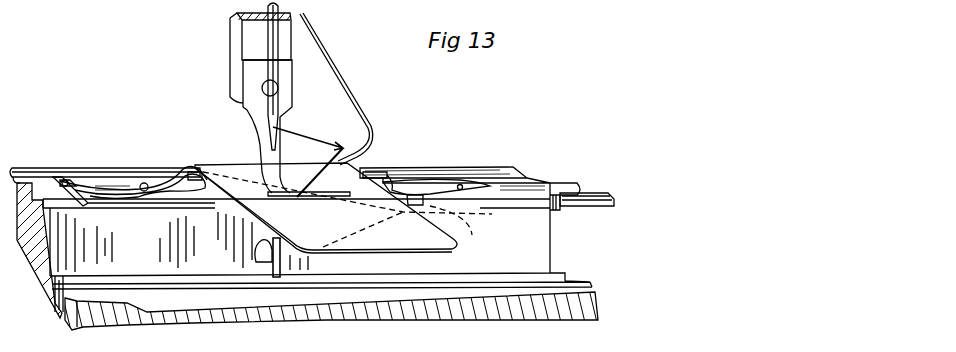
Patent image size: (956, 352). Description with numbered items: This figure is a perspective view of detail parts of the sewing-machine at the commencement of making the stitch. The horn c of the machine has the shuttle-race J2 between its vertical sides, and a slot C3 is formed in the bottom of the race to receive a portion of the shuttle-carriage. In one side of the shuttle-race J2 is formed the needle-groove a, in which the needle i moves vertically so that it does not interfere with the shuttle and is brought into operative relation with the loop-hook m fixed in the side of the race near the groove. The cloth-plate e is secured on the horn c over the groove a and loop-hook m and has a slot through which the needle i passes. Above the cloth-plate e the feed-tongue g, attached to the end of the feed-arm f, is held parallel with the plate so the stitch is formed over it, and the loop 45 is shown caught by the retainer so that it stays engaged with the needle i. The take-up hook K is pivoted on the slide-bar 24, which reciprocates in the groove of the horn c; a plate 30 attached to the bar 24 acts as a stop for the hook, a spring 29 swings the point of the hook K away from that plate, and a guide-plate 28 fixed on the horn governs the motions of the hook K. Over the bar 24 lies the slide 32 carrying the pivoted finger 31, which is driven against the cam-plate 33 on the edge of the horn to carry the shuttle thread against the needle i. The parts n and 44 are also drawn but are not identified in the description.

The shuttle-race J2 is at (317, 236).
The horn c is at (42, 268).
The slot C3 is at (565, 281).
The guide-plate 28 is at (46, 169).
The plate 30 is at (134, 191).
The take-up hook K is at (168, 181).
The spring 29 is at (72, 182).
The spring end 44 is at (190, 170).
The cloth-plate e is at (343, 208).
The needle i is at (279, 9).
The feed-arm f is at (235, 32).
The feed-tongue g is at (255, 105).
The arm n is at (338, 70).
The loop 45 is at (308, 158).
The loop-hook m is at (250, 255).
The needle-groove a is at (273, 255).
The cam-plate 33 is at (380, 172).
The pivoted finger 31 is at (410, 185).
The slide 32 is at (546, 186).
The slide-bar 24 is at (615, 203).